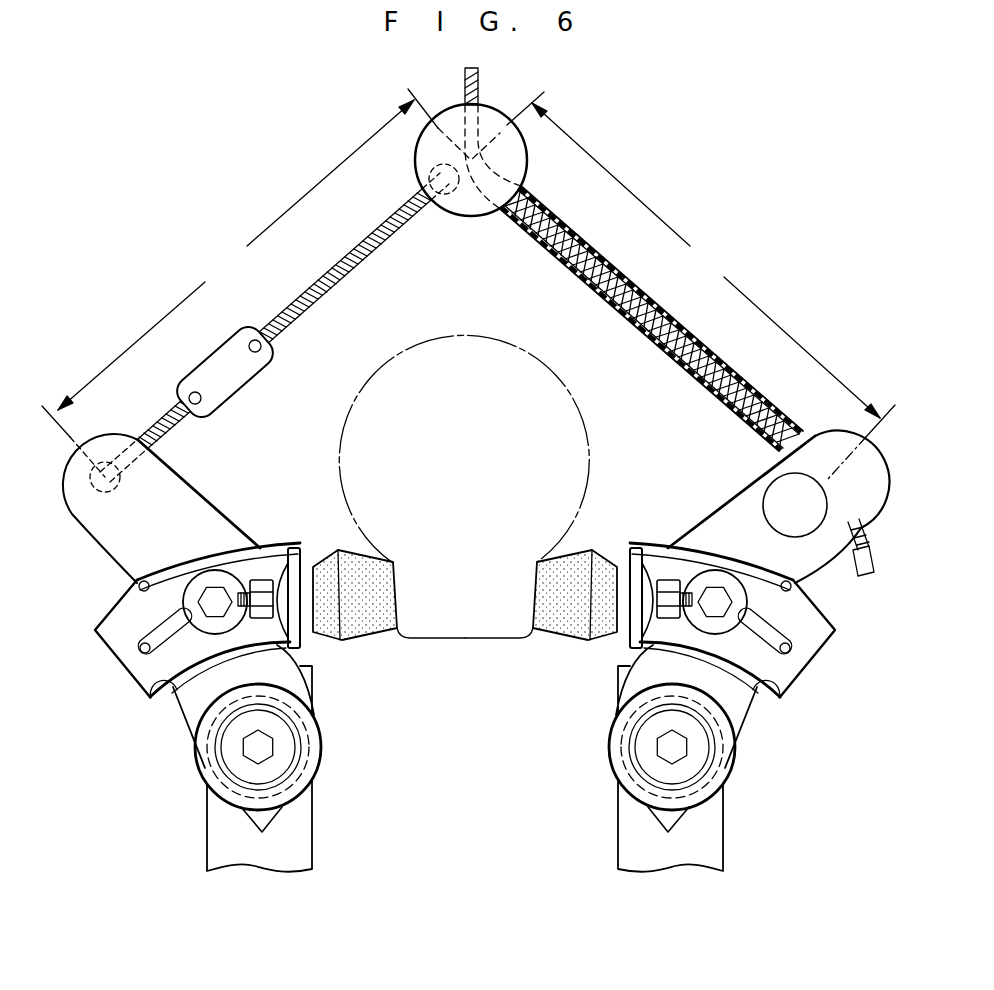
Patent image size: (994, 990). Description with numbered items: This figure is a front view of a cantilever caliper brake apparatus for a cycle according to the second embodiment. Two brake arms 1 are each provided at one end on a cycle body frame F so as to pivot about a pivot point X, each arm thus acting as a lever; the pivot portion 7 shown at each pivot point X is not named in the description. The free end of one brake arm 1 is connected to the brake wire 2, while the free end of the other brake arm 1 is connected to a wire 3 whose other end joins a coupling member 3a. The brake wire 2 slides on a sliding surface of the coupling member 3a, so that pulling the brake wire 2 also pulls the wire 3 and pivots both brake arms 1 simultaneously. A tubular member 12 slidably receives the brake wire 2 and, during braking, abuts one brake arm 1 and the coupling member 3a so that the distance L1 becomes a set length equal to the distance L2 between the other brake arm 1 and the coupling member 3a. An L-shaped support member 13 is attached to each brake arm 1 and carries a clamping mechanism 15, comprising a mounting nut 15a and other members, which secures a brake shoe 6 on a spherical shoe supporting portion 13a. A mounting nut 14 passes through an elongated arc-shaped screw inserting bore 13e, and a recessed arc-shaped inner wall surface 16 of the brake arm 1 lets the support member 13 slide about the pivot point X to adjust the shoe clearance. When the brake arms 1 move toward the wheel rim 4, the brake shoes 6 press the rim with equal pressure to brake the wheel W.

The brake arm 1 is at (107, 432).
The brake wire 2 is at (477, 84).
The wire 3 is at (342, 262).
The coupling member 3a is at (472, 216).
The wheel rim 4 is at (457, 646).
The brake shoe 6 is at (356, 643).
The pivot bracket 7 is at (312, 758).
The tubular member 12 is at (702, 346).
The support member 13 is at (97, 629).
The shoe supporting portion 13a is at (303, 562).
The screw inserting bore 13e is at (147, 648).
The mounting nut 14 is at (207, 593).
The clamping mechanism 15 is at (294, 538).
The mounting nut 15a is at (259, 578).
The inner wall surface 16 is at (140, 585).
The wheel W is at (514, 345).
The cycle body frame F is at (300, 850).
The pivot point X is at (258, 747).
The distance between brake arm and coupling member L1 is at (701, 286).
The distance between other brake arm and coupling member L2 is at (240, 283).